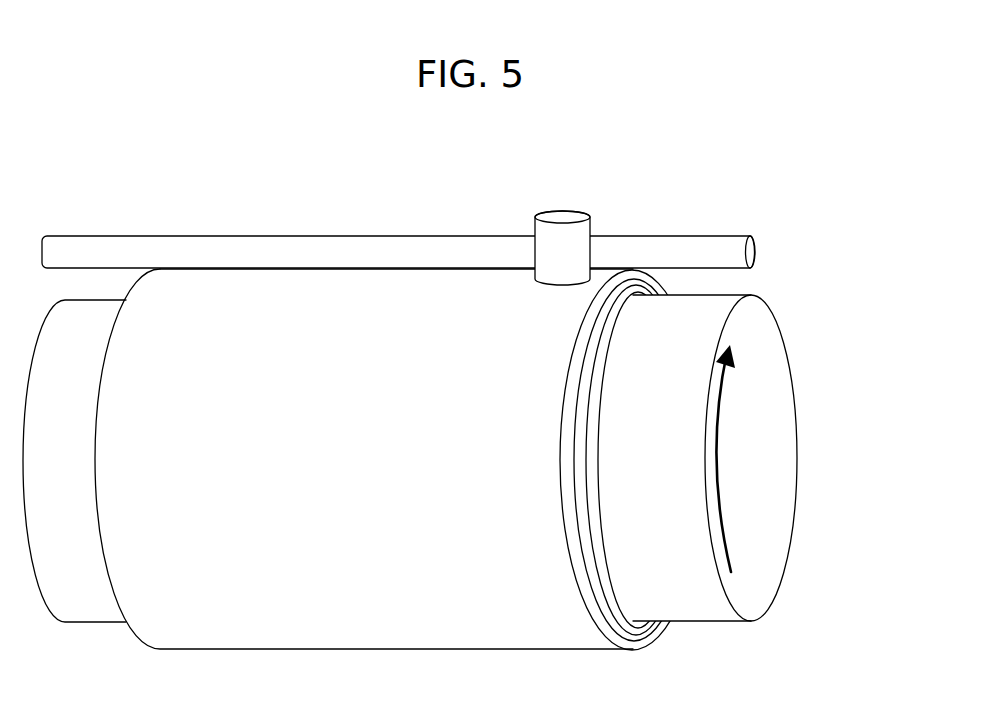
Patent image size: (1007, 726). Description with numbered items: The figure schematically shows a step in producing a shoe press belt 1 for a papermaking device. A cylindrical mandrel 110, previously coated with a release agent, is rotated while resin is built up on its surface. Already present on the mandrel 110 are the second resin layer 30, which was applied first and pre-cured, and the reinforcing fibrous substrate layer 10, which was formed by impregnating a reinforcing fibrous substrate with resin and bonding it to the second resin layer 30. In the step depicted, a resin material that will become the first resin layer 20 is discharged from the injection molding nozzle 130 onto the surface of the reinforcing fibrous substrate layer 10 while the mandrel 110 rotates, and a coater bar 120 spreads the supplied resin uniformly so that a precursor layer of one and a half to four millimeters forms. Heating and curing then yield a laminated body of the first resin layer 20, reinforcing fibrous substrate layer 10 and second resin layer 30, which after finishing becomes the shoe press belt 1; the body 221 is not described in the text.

The shoe press belt 1 is at (473, 424).
The reinforcing fibrous substrate layer 10 is at (615, 637).
The first resin layer 20 is at (587, 602).
The second resin layer 30 is at (650, 627).
The mandrel 110 is at (770, 452).
The coater bar 120 is at (757, 249).
The injection molding nozzle 130 is at (560, 208).
The housing 221 is at (302, 650).